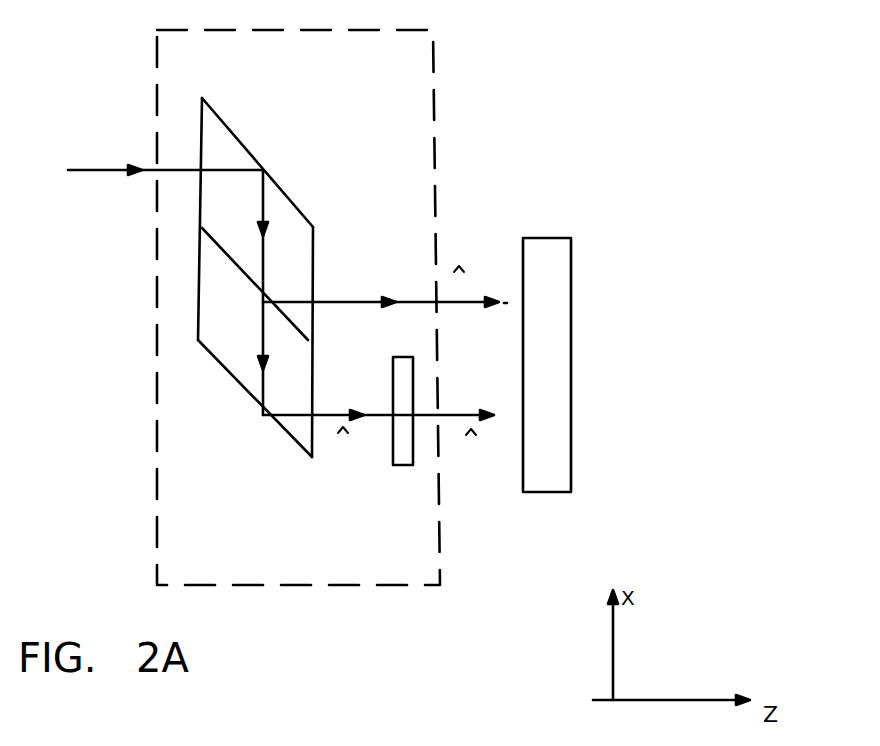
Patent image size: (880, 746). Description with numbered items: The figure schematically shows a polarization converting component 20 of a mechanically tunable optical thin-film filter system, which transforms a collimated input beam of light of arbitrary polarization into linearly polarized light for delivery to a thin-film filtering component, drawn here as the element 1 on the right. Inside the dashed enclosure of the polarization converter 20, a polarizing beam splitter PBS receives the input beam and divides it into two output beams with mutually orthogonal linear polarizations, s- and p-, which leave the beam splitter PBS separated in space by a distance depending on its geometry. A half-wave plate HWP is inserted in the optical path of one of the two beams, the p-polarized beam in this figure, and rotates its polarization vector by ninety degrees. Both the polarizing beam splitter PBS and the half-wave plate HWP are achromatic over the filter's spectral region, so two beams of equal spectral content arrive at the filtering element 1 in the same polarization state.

The polarization converting component 20 is at (442, 97).
The target element / object receiving polarized beams 1 is at (559, 218).
The polarizing beam splitter PBS is at (248, 126).
The half-wave plate HWP is at (400, 477).